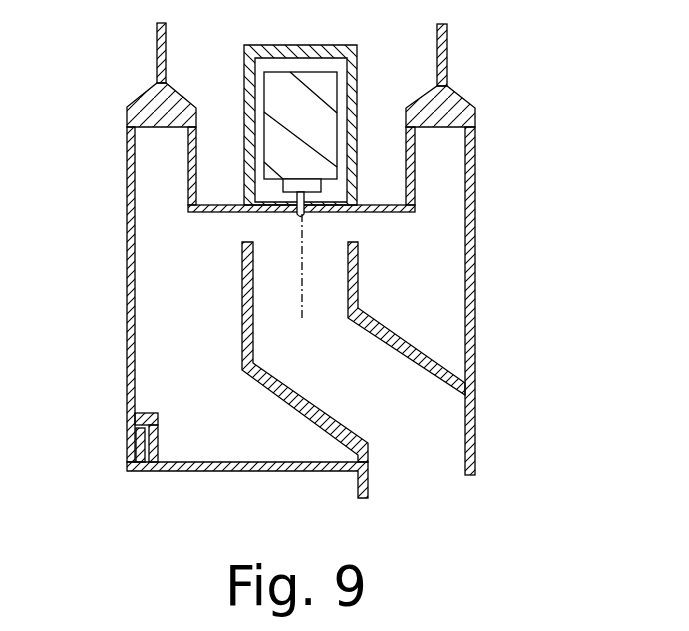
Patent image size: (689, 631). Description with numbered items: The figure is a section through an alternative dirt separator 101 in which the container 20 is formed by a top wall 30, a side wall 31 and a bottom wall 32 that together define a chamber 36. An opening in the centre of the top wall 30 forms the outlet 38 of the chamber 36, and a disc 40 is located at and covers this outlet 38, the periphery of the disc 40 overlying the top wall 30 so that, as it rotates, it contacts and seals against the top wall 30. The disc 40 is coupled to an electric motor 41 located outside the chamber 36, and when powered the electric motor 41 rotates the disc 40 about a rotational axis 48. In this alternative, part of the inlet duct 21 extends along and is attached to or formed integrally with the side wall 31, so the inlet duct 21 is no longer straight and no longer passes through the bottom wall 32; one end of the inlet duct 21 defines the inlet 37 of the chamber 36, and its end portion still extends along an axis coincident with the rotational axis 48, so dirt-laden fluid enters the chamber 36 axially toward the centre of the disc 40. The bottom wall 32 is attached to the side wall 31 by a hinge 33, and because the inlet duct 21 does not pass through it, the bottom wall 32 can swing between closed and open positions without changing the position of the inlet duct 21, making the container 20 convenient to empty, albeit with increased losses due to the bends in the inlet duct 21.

The alternative dirt separator 101 is at (524, 79).
The container 20 is at (475, 343).
The inlet duct 21 is at (358, 290).
The top wall 30 is at (167, 128).
The side wall 31 is at (132, 373).
The bottom wall 32 is at (238, 473).
The hinge 33 is at (140, 432).
The chamber 36 is at (193, 320).
The inlet 37 is at (283, 245).
The outlet 38 is at (220, 205).
The disc 40 is at (390, 212).
The electric motor 41 is at (325, 145).
The rotational axis 48 is at (300, 322).